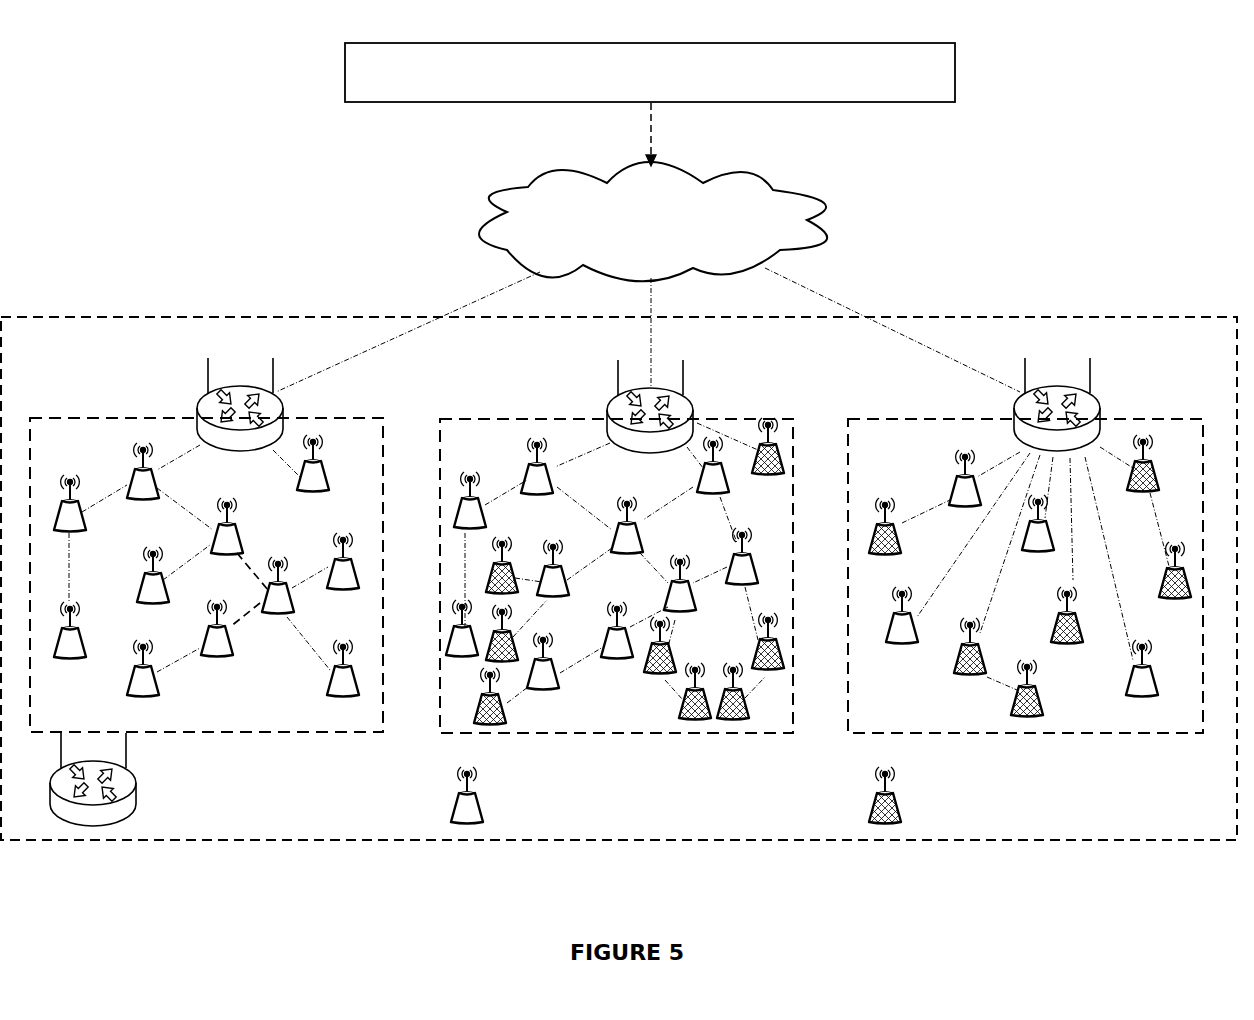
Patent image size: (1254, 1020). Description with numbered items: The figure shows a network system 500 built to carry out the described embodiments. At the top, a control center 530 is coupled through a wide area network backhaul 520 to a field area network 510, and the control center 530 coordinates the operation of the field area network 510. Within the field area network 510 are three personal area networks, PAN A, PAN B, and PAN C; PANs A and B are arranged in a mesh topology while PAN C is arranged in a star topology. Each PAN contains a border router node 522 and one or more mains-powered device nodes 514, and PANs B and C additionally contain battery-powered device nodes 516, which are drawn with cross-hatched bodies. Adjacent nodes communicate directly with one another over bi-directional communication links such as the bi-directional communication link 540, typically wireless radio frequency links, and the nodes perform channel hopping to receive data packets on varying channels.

The network system 500 is at (1166, 92).
The field area network 510 is at (619, 578).
The mains-powered device node 514 is at (478, 802).
The battery-powered device node 516 is at (897, 802).
The wide area network backhaul 520 is at (758, 234).
The border router node 522 is at (138, 800).
The control center 530 is at (772, 84).
The bi-directional communication link 540 is at (243, 620).